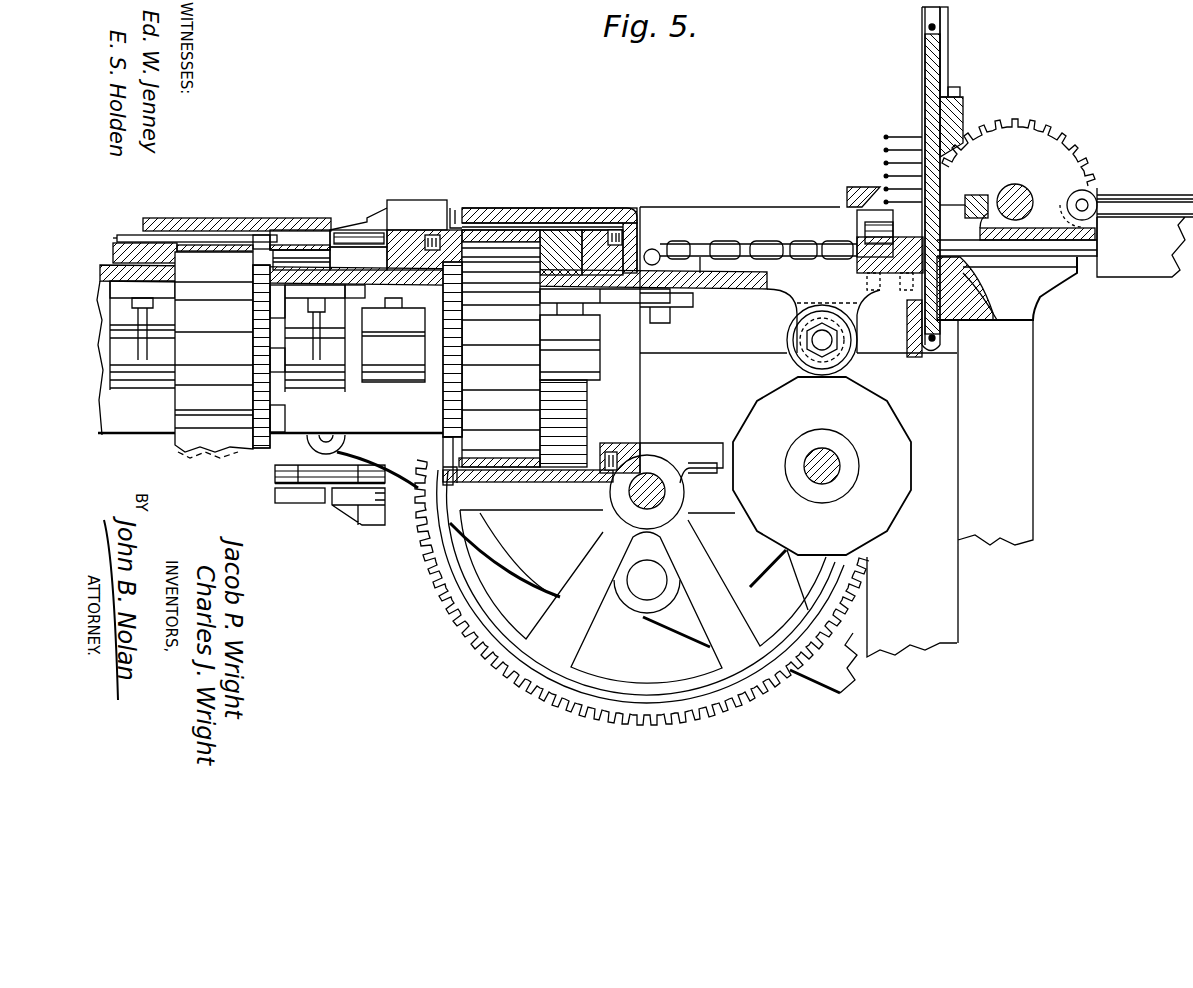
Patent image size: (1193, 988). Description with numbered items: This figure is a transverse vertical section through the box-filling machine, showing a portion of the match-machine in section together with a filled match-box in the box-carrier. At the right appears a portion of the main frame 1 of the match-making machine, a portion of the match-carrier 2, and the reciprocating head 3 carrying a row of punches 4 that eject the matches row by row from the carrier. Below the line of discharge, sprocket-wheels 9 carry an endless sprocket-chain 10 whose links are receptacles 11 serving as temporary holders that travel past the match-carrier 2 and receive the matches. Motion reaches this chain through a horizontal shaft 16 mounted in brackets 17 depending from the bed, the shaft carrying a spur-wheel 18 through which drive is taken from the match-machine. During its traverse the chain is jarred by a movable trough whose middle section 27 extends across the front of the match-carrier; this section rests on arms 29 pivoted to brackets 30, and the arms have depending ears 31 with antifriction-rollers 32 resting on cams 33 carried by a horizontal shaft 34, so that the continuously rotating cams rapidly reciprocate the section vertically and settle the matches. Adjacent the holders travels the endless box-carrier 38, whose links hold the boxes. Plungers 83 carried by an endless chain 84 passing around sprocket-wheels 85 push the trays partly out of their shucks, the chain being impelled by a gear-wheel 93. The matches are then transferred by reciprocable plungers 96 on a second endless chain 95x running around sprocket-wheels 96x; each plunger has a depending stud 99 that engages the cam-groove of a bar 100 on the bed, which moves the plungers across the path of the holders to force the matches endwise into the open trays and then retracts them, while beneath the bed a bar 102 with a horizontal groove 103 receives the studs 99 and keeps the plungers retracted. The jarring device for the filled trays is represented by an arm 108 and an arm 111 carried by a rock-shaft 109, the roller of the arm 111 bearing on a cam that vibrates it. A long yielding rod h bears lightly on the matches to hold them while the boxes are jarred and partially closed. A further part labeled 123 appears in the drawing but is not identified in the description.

The main frame 1 is at (1162, 269).
The match-carrier 2 is at (922, 86).
The reciprocating head 3 is at (993, 195).
The punches 4 is at (960, 195).
The sprocket-wheels 9 is at (364, 222).
The endless sprocket-chain 10 is at (452, 173).
The receptacles 11 is at (410, 194).
The horizontal shaft 16 is at (667, 495).
The brackets 17 is at (627, 512).
The spur-wheel 18 is at (430, 577).
The middle section 27 is at (862, 272).
The arms 29 is at (857, 245).
The brackets 30 is at (655, 249).
The depending ears 31 is at (803, 310).
The antifriction-rollers 32 is at (803, 363).
The cams 33 is at (900, 420).
The horizontal shaft 34 is at (860, 425).
The box-carrier 38 is at (270, 485).
The plungers 83 is at (130, 240).
The endless chain 84 is at (220, 246).
The sprocket-wheels 85 is at (253, 452).
The gear-wheel 93 is at (272, 400).
The endless chain 95x is at (500, 230).
The reciprocable plungers 96 is at (573, 223).
The sprocket-wheels 96x is at (473, 420).
The depending stud 99 is at (617, 232).
The bar 100 is at (612, 135).
The bar 102 is at (720, 437).
The horizontal groove 103 is at (705, 403).
The arm 108 is at (560, 554).
The rock-shaft 109 is at (610, 649).
The arm 111 is at (665, 665).
The sleeve 123 is at (287, 230).
The yielding rod h is at (363, 222).